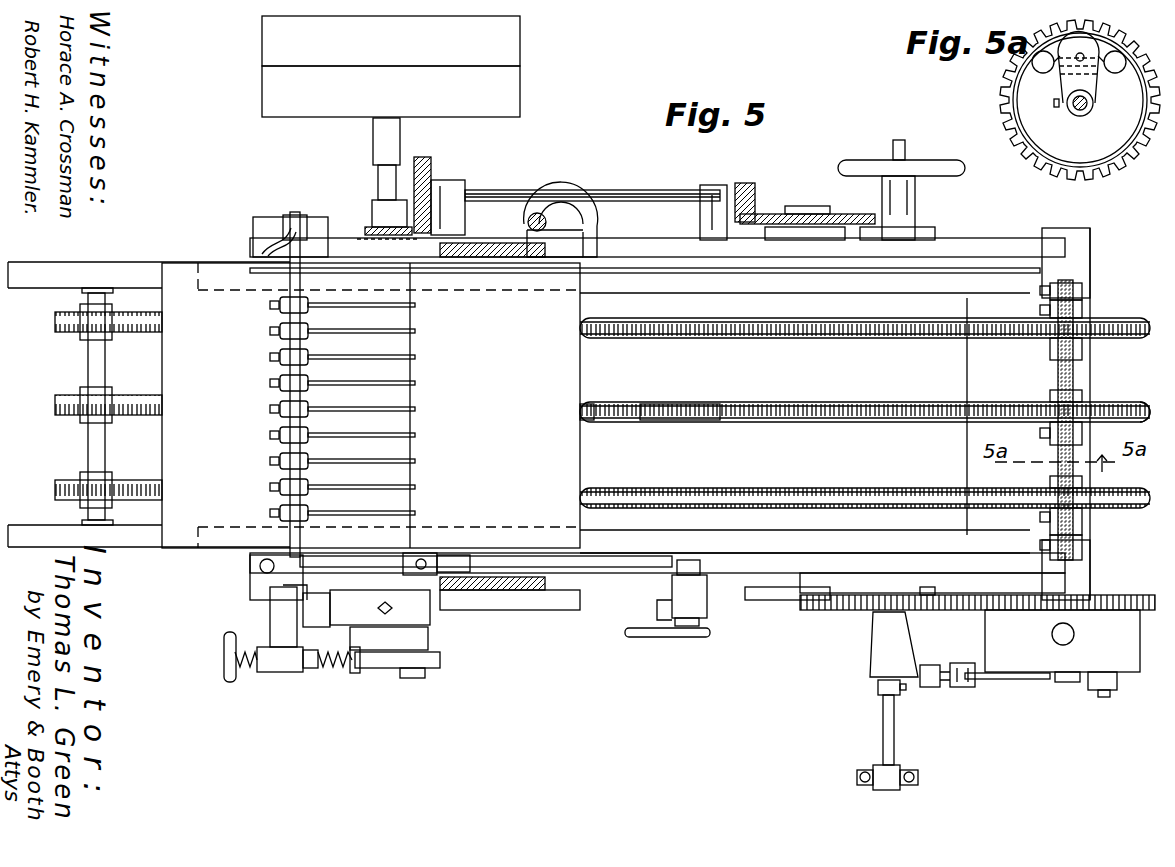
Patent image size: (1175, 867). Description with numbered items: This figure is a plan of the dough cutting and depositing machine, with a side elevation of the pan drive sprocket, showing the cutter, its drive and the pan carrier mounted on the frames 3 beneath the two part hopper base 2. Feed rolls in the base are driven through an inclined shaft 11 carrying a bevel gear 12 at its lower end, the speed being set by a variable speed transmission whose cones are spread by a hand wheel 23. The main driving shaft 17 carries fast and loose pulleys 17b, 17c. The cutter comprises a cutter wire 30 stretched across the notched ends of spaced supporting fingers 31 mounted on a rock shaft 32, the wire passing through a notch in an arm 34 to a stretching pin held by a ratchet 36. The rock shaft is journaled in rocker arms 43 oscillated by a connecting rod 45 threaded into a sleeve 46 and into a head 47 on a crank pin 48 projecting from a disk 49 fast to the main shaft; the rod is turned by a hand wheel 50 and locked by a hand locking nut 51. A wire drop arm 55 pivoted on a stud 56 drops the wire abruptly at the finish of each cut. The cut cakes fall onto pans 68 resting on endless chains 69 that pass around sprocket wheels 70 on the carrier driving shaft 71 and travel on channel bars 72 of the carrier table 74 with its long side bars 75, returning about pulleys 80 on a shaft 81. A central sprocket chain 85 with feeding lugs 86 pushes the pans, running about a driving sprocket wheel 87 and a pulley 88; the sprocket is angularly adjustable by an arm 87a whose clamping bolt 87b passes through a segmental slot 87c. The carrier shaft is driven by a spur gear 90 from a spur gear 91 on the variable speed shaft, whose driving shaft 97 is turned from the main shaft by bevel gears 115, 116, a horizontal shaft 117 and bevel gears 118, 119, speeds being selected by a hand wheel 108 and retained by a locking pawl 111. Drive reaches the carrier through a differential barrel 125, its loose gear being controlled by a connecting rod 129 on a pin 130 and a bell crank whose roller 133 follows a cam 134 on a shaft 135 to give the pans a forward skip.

In FIG. 5, the base 2 is at (487, 243).
In FIG. 5, the frames 3 is at (641, 250).
In FIG. 5, the inclined shaft 11 is at (540, 212).
In FIG. 5, the bevel gear 12 is at (578, 199).
In FIG. 5, the driving shaft 17 is at (374, 181).
In FIG. 5, the fast pulley 17b is at (521, 92).
In FIG. 5, the loose pulley 17c is at (521, 45).
In FIG. 5, the hand wheel 23 is at (710, 632).
In FIG. 5, the cutter wire 30 is at (415, 455).
In FIG. 5, the supporting fingers 31 is at (393, 264).
In FIG. 5, the rock shaft 32 is at (282, 372).
In FIG. 5, the arm 34 is at (418, 552).
In FIG. 5, the ratchet 36 is at (256, 569).
In FIG. 5, the rocker arms 43 is at (256, 234).
In FIG. 5, the connecting rod 45 is at (248, 670).
In FIG. 5, the sleeve 46 is at (290, 662).
In FIG. 5, the head 47 is at (372, 672).
In FIG. 5, the crank pin 48 is at (414, 678).
In FIG. 5, the disk 49 is at (418, 638).
In FIG. 5, the hand wheel 50 is at (230, 636).
In FIG. 5, the hand locking nut 51 is at (315, 672).
In FIG. 5, the wire drop arm 55 is at (640, 568).
In FIG. 5, the stud 56 is at (706, 623).
In FIG. 5, the pans 68 is at (568, 373).
In FIG. 5, the endless chains 69 is at (835, 333).
In FIG. 5, the sprocket wheels 70 is at (1103, 328).
In FIG. 5, the carrier driving shaft 71 is at (1075, 373).
In FIG. 5A, the carrier driving shaft 71 is at (1077, 116).
In FIG. 5, the channel bars 72 is at (905, 335).
In FIG. 5, the carrier table 74 is at (952, 373).
In FIG. 5, the side bars 75 is at (136, 278).
In FIG. 5, the pulleys 80 is at (58, 336).
In FIG. 5, the shaft 81 is at (100, 360).
In FIG. 5, the sprocket chain 85 is at (682, 412).
In FIG. 5, the feeding lugs 86 is at (586, 411).
In FIG. 5, the driving sprocket wheel 87 is at (1122, 407).
In FIG. 5A, the driving sprocket wheel 87 is at (1008, 86).
In FIG. 5A, the arm 87a is at (1068, 78).
In FIG. 5A, the clamping bolt 87b is at (1106, 92).
In FIG. 5A, the segmental slot 87c is at (1097, 62).
In FIG. 5, the pulley 88 is at (60, 398).
In FIG. 5, the spur gear 90 is at (1094, 605).
In FIG. 5, the spur gear 91 is at (917, 611).
In FIG. 5, the driving shaft 97 is at (812, 264).
In FIG. 5, the hand wheel 108 is at (868, 169).
In FIG. 5, the locking pawl 111 is at (893, 151).
In FIG. 5, the bevel gear 115 is at (372, 223).
In FIG. 5, the bevel gear 116 is at (432, 163).
In FIG. 5, the horizontal shaft 117 is at (615, 196).
In FIG. 5, the bevel gear 118 is at (745, 183).
In FIG. 5, the bevel gear 119 is at (770, 214).
In FIG. 5, the barrel 125 is at (1047, 661).
In FIG. 5, the connecting rod 129 is at (1013, 678).
In FIG. 5, the pin 130 is at (1112, 684).
In FIG. 5, the roller 133 is at (937, 687).
In FIG. 5, the cam 134 is at (907, 649).
In FIG. 5, the shaft 135 is at (887, 728).